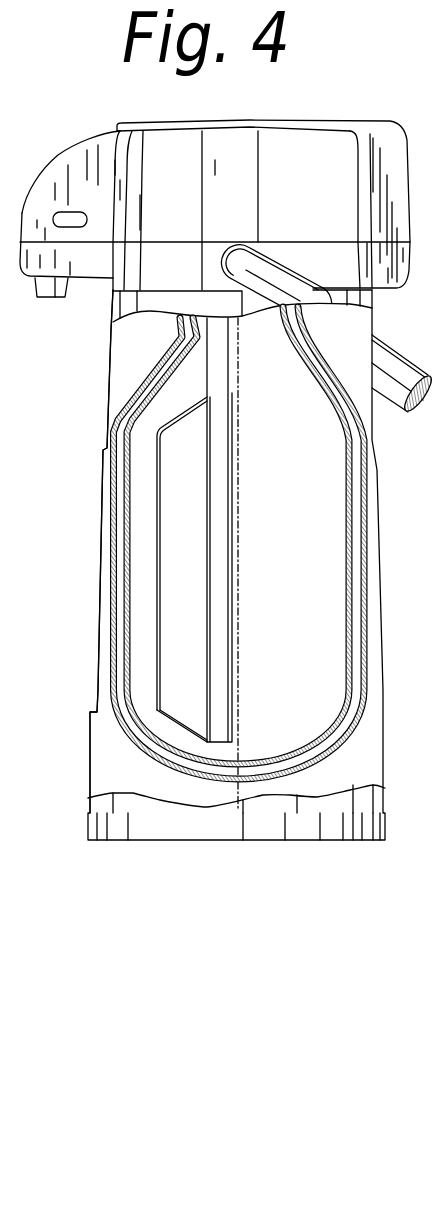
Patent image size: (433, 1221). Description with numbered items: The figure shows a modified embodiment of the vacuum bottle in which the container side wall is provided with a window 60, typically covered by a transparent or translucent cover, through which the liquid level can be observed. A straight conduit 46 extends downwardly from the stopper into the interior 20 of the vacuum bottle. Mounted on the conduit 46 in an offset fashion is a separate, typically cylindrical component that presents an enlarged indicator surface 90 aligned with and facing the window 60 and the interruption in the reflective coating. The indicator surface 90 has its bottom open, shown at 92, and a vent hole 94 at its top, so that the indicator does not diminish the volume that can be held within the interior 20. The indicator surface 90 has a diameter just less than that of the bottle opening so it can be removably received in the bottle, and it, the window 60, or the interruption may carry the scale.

The interior 20 is at (305, 530).
The conduit 46 is at (210, 383).
The window 60 is at (107, 448).
The indicator surface 90 is at (158, 578).
The open bottom 92 is at (181, 722).
The vent hole 94 is at (180, 423).